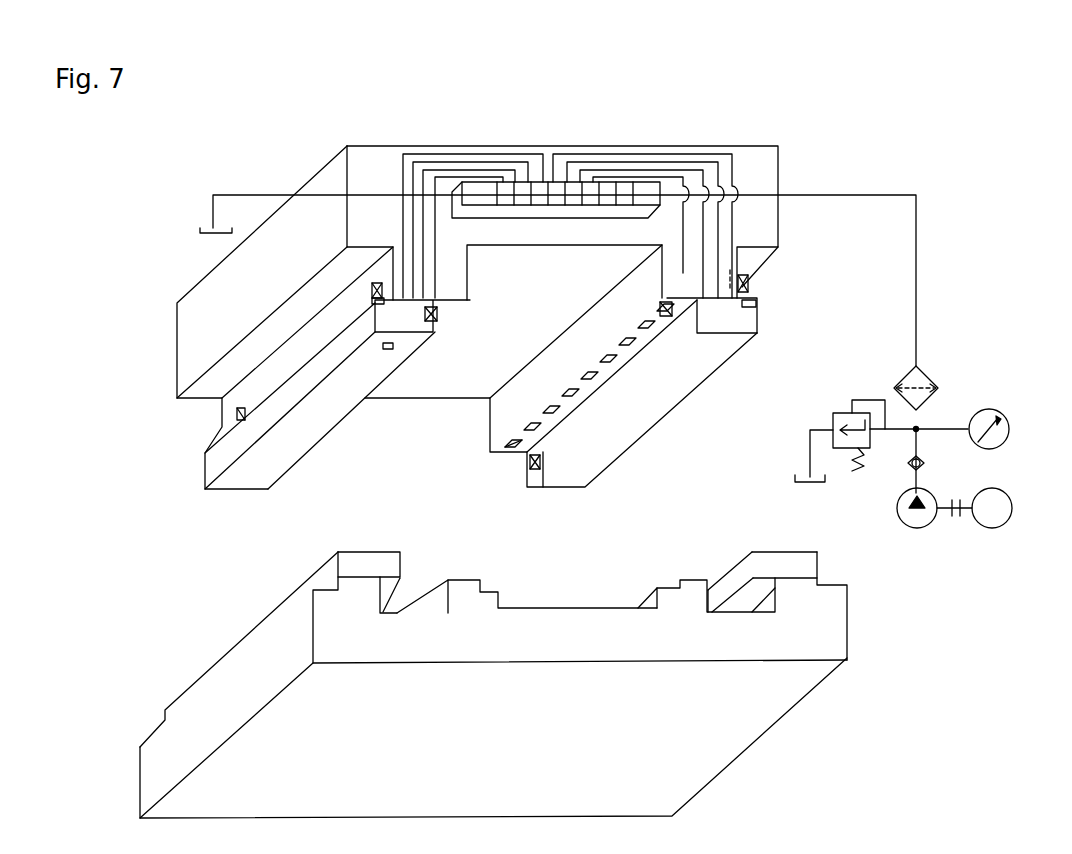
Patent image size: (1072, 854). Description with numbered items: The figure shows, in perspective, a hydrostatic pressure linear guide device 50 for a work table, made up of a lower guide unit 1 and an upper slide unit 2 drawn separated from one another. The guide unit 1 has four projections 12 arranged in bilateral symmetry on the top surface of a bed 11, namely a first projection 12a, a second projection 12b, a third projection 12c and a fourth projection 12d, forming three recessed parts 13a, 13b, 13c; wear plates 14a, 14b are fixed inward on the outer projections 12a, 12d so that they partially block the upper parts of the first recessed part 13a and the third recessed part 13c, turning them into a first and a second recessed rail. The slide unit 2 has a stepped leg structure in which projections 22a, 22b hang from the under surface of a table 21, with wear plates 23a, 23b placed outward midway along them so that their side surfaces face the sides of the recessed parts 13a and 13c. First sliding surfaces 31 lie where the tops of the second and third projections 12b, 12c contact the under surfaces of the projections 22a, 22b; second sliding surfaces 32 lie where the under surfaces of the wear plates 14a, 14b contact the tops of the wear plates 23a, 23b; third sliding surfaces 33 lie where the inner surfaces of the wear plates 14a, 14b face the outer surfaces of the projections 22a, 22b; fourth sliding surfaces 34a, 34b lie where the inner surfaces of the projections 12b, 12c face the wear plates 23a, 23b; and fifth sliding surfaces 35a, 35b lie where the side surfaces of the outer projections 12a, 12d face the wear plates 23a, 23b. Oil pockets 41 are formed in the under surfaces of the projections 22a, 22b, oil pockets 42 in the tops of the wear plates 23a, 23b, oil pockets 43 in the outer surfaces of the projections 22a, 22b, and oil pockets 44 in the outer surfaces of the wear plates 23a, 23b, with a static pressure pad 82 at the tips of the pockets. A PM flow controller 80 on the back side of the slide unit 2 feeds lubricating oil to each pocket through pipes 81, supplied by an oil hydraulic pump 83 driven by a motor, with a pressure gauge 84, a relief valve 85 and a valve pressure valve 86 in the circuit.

The guide unit 1 is at (112, 738).
The slide unit 2 is at (178, 242).
The bed 11 is at (145, 776).
The guide block 12 is at (580, 607).
The first projection 12a is at (847, 624).
The second projection 12b is at (660, 590).
The third projection 12c is at (492, 590).
The fourth projection 12d is at (365, 600).
The first recessed part (first recessed rail) 13a is at (736, 600).
The second recessed part 13b is at (578, 600).
The third recessed part (second recessed rail) 13c is at (405, 606).
The wear plate 14a is at (818, 567).
The wear plate 14b is at (363, 550).
The table 21 is at (176, 350).
The projection 22a is at (612, 293).
The projection 22b is at (470, 266).
The wear plate 23a is at (762, 318).
The wear plate 23b is at (203, 470).
The first sliding surface 31 is at (462, 310).
The second sliding surface 32 is at (758, 306).
The third sliding surface 33 is at (742, 298).
The fourth sliding surface 34a is at (527, 472).
The fourth sliding surface 34b is at (433, 320).
The fifth sliding surface 35a is at (772, 606).
The fifth sliding surface 35b is at (385, 602).
The oil pocket 41 is at (442, 316).
The oil pocket 42 is at (378, 304).
The oil pocket 43 is at (368, 288).
The oil pocket 44 is at (394, 343).
The hydrostatic pressure linear guide device 50 is at (668, 98).
The PM flow controller 80 is at (461, 192).
The pipes 81 is at (400, 176).
The static pressure pad 82 is at (243, 415).
The oil hydraulic pump 83 is at (930, 490).
The pressure gauge 84 is at (989, 409).
The relief valve 85 is at (865, 456).
The valve pressure valve 86 is at (922, 372).